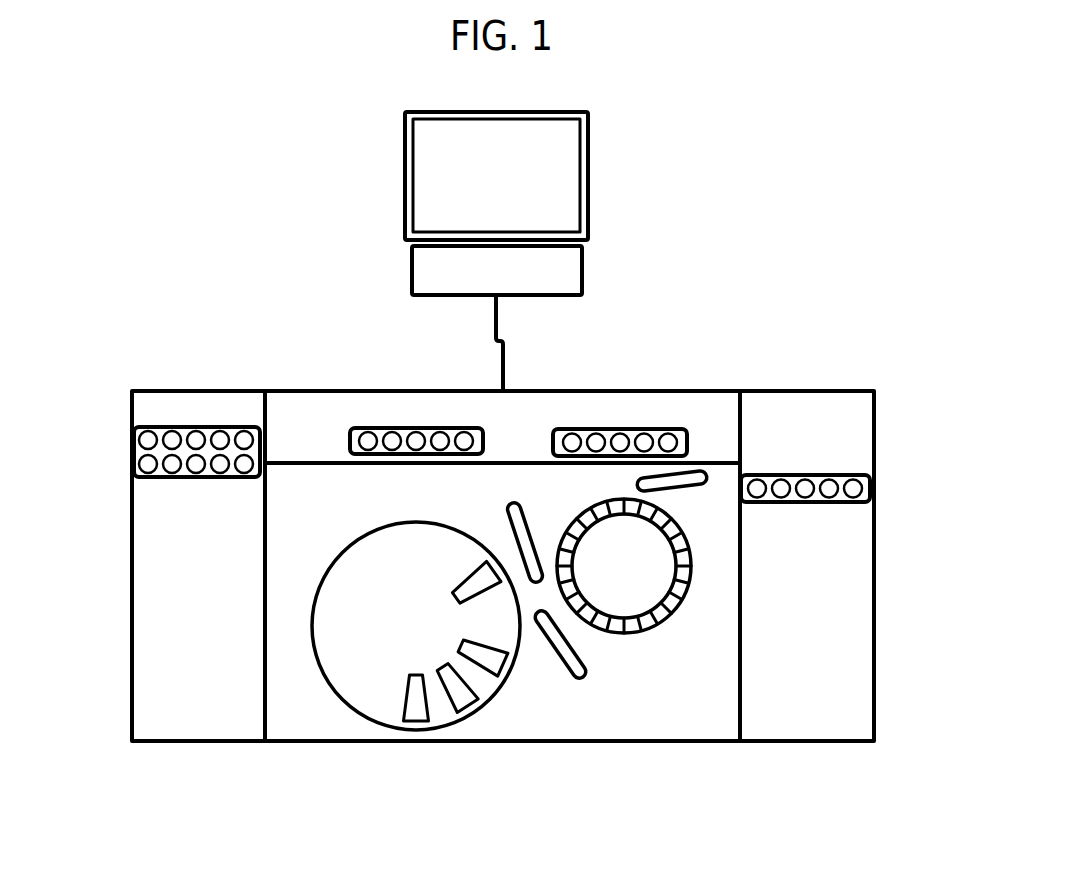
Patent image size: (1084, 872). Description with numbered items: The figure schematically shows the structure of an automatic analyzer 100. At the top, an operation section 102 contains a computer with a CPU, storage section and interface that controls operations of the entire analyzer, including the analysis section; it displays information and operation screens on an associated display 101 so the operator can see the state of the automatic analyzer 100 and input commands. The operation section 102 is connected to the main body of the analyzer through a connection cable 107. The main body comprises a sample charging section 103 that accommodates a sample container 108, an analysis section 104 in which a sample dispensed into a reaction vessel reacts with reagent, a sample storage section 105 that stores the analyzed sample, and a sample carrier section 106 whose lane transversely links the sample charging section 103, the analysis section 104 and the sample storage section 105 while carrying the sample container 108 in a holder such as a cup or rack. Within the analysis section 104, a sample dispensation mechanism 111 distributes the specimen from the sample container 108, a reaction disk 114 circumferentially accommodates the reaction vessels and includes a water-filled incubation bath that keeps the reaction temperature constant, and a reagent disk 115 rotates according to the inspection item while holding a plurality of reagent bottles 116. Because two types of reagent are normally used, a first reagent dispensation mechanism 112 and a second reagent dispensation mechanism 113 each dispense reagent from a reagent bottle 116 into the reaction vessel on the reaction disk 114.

The automatic analyzer 100 is at (233, 130).
The display 101 is at (590, 132).
The operation section 102 is at (584, 258).
The sample charging section 103 is at (131, 547).
The analysis section 104 is at (300, 743).
The sample storage section 105 is at (878, 420).
The sample carrier section 106 is at (697, 391).
The connection cable 107 is at (498, 326).
The sample container 108 is at (368, 427).
The sample dispensation mechanism 111 is at (700, 489).
The first reagent dispensation mechanism 112 is at (512, 502).
The second reagent dispensation mechanism 113 is at (576, 683).
The reaction disk 114 is at (648, 628).
The reagent disk 115 is at (408, 726).
The reagent bottle 116 is at (476, 708).